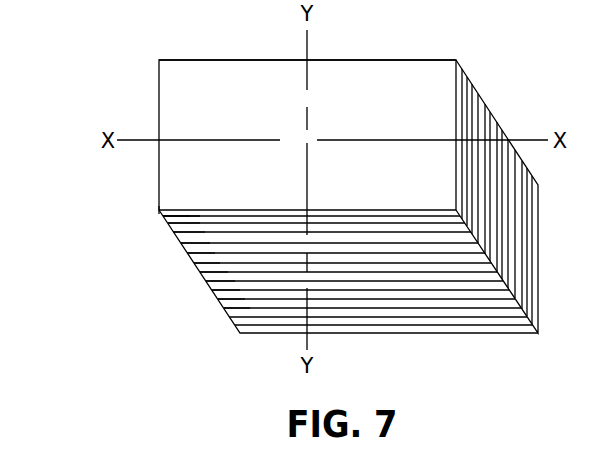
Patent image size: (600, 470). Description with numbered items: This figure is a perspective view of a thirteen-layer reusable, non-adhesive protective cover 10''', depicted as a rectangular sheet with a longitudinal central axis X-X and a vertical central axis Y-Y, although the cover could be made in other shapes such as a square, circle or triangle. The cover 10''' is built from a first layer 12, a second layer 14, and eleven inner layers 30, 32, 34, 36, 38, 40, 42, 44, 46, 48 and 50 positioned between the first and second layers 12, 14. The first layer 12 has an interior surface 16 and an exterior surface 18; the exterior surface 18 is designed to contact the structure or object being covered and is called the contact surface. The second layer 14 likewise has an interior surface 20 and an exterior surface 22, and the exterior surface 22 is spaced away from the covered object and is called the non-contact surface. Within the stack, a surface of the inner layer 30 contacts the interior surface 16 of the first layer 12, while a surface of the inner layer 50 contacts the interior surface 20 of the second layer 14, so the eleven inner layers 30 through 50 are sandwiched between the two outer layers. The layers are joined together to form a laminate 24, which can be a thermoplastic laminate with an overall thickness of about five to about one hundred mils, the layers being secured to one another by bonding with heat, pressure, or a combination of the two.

The reusable, non-adhesive protective cover 10''' is at (554, 18).
The first layer 12 is at (440, 340).
The second layer 14 is at (150, 212).
The interior surface 16 is at (405, 313).
The exterior surface 18 is at (498, 334).
The interior surface 20 is at (165, 218).
The exterior surface 22 is at (359, 105).
The laminate 24 is at (210, 52).
The inner layer 30 is at (225, 313).
The inner layer 32 is at (218, 300).
The inner layer 34 is at (211, 289).
The inner layer 36 is at (204, 278).
The inner layer 38 is at (197, 268).
The inner layer 40 is at (191, 258).
The inner layer 42 is at (184, 248).
The inner layer 44 is at (179, 240).
The inner layer 46 is at (174, 233).
The inner layer 48 is at (170, 226).
The inner layer 50 is at (166, 221).